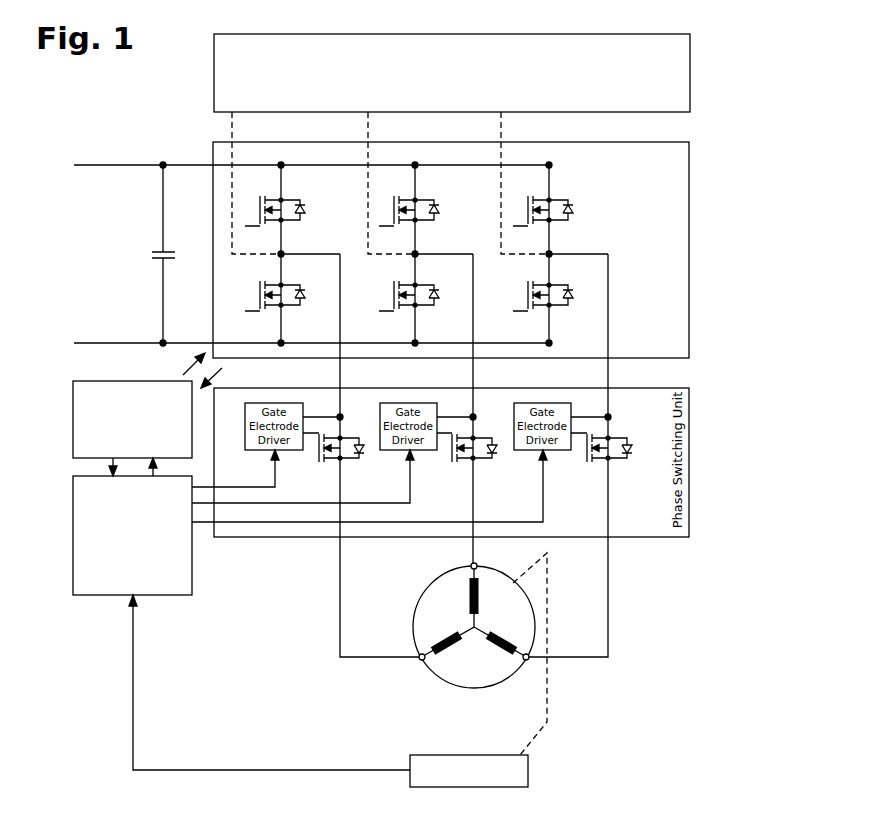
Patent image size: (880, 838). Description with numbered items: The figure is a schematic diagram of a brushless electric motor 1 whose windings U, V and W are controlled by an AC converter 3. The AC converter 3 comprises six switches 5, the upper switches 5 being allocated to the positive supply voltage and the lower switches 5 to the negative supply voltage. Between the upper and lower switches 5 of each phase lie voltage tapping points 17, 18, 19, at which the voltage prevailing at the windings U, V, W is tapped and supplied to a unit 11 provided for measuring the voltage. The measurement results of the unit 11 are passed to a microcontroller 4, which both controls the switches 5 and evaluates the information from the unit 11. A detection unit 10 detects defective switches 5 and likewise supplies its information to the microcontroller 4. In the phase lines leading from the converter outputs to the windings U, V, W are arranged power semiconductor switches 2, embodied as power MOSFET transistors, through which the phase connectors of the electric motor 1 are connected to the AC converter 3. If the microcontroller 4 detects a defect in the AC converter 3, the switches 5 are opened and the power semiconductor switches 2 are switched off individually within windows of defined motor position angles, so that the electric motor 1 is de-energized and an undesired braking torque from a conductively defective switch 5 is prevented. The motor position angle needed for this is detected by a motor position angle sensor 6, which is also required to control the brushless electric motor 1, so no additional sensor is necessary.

The brushless electric motor 1 is at (426, 676).
The power semiconductor switches 2 is at (469, 451).
The AC converter 3 is at (690, 172).
The microcontroller 4 is at (73, 520).
The switches 5 is at (421, 254).
The motor position angle sensor 6 is at (528, 771).
The detection unit 10 is at (73, 417).
The unit provided for measuring the voltage 11 is at (690, 68).
The voltage tapping point 17 is at (285, 252).
The voltage tapping point 18 is at (419, 252).
The voltage tapping point 19 is at (553, 252).